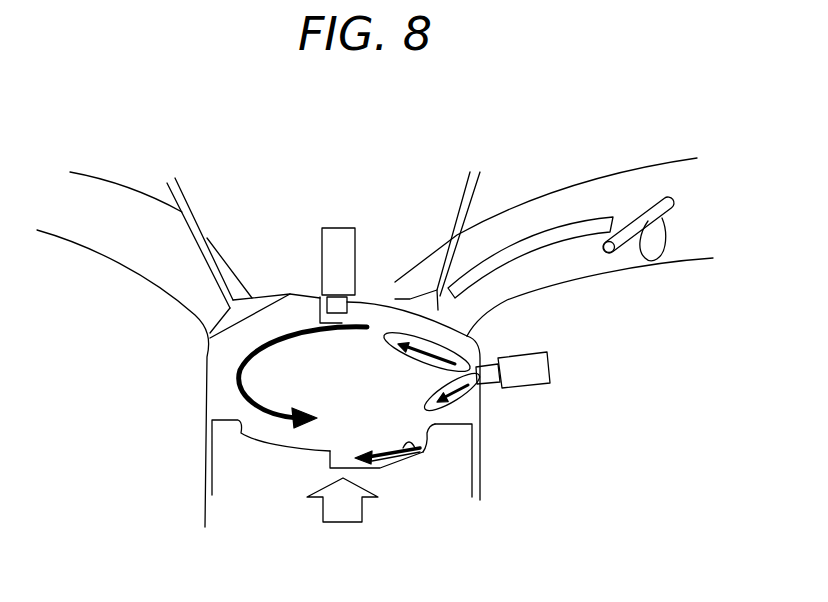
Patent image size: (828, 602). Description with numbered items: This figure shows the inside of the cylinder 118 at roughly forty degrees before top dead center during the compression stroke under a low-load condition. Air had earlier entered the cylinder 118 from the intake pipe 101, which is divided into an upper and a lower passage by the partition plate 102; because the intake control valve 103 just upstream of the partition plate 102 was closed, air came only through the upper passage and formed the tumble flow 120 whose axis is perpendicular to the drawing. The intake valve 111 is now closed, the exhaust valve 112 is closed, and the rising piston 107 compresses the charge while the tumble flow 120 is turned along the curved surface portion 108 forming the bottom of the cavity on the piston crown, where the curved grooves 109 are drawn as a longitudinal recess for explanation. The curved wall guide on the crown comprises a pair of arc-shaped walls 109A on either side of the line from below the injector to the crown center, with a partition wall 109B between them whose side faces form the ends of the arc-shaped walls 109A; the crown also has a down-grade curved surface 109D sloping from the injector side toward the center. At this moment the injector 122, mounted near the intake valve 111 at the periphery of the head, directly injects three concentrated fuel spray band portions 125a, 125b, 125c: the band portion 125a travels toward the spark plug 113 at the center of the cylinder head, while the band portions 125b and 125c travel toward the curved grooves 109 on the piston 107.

The intake pipe 101 is at (622, 172).
The partition plate 102 is at (552, 232).
The intake control valve 103 is at (642, 262).
The piston 107 is at (480, 463).
The curved surface portion 108 is at (240, 437).
The curved groove 109 is at (390, 481).
The arc-shaped wall 109A is at (363, 424).
The partition wall 109B is at (335, 452).
The down-grade curved surface 109D is at (420, 452).
The intake valve 111 is at (458, 200).
The exhaust valve 112 is at (187, 198).
The spark plug 113 is at (340, 227).
The cylinder 118 is at (303, 297).
The tumble flow 120 is at (278, 418).
The injector 122 is at (552, 371).
The fuel spray band portion 125a is at (420, 343).
The fuel spray band portion 125b is at (538, 397).
The fuel spray band portion 125c is at (427, 410).